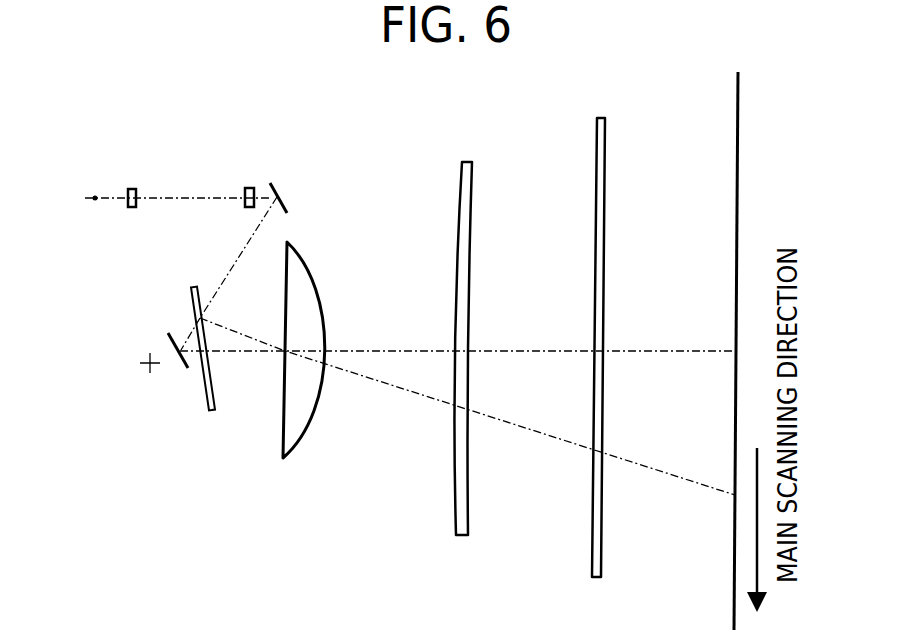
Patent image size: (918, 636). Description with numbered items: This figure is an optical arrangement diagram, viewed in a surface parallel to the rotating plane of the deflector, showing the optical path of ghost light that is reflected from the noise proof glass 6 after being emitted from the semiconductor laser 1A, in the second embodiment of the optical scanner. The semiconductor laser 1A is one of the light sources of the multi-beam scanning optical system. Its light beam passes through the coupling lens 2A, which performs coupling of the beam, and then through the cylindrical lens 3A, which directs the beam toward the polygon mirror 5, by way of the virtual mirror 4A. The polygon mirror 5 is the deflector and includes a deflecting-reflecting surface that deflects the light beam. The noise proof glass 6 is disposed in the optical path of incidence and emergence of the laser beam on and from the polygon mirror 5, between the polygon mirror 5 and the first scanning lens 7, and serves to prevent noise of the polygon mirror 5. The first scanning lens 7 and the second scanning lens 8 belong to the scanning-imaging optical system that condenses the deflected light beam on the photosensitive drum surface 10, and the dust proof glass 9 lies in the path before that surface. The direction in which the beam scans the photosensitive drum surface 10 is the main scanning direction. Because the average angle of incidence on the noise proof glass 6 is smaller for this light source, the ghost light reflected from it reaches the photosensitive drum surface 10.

The semiconductor laser 1A is at (93, 181).
The coupling lens 2A is at (137, 180).
The cylindrical lens 3A is at (247, 180).
The virtual mirror 4A is at (282, 180).
The polygon mirror 5 is at (160, 325).
The noise proof glass 6 is at (202, 397).
The first scanning lens 7 is at (302, 243).
The second scanning lens 8 is at (470, 157).
The dust proof glass 9 is at (607, 117).
The photosensitive drum surface 10 is at (740, 95).